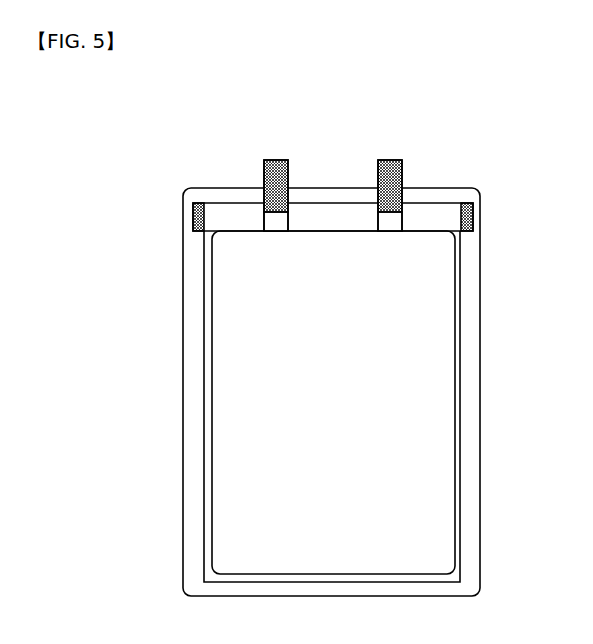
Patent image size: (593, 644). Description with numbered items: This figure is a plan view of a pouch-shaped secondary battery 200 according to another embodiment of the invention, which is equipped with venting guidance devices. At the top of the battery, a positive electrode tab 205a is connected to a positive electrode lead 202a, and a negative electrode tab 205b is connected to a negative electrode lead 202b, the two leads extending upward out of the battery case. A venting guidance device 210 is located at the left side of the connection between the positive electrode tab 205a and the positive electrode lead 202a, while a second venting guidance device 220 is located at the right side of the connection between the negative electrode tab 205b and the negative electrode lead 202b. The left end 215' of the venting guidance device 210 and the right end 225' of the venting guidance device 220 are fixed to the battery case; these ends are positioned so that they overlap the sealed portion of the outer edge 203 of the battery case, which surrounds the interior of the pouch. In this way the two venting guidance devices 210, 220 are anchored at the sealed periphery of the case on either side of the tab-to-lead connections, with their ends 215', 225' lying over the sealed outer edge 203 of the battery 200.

The pouch-shaped secondary battery 200 is at (92, 133).
The positive electrode lead 202a is at (273, 160).
The negative electrode lead 202b is at (393, 160).
The outer edge 203 is at (196, 427).
The positive electrode tab 205a is at (290, 226).
The negative electrode tab 205b is at (423, 232).
The venting guidance device 210 is at (222, 197).
The left end 215' is at (158, 227).
The venting guidance device 220 is at (435, 197).
The right end 225' is at (517, 217).